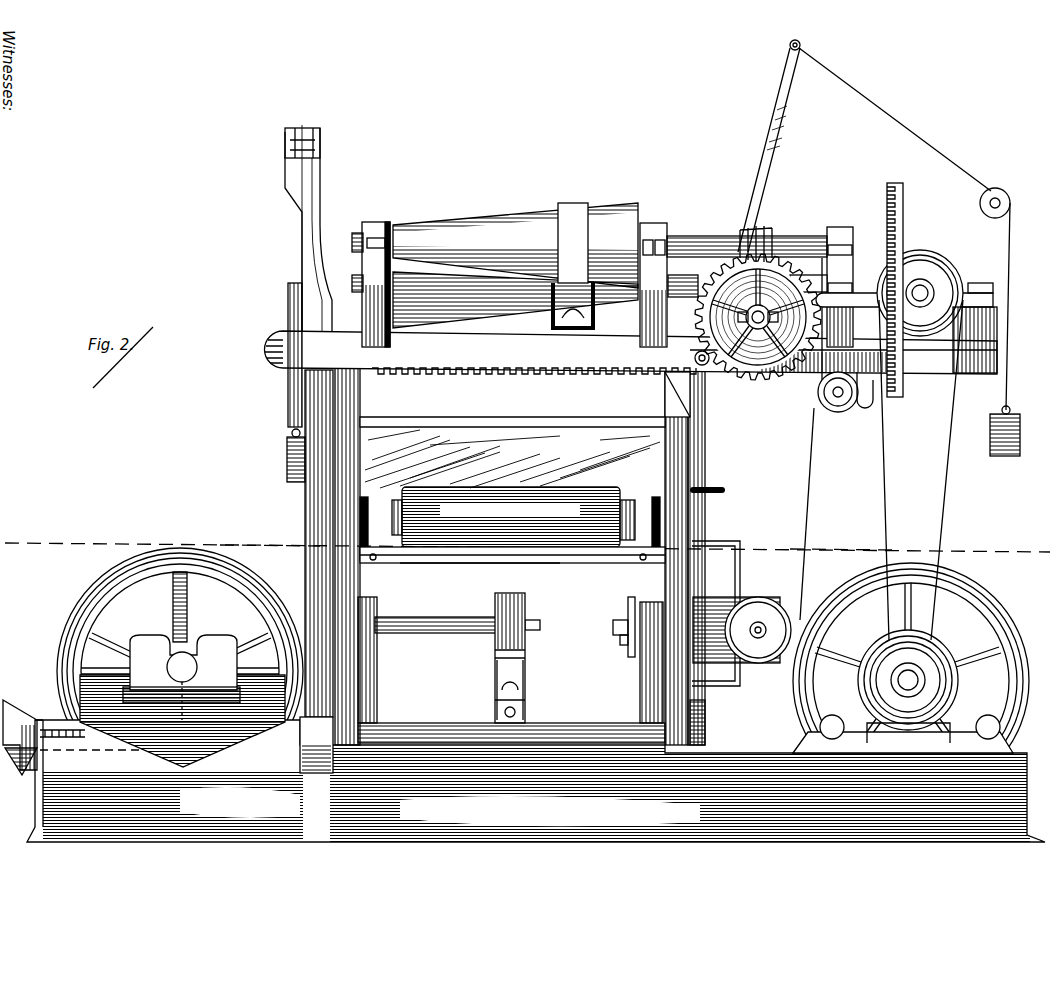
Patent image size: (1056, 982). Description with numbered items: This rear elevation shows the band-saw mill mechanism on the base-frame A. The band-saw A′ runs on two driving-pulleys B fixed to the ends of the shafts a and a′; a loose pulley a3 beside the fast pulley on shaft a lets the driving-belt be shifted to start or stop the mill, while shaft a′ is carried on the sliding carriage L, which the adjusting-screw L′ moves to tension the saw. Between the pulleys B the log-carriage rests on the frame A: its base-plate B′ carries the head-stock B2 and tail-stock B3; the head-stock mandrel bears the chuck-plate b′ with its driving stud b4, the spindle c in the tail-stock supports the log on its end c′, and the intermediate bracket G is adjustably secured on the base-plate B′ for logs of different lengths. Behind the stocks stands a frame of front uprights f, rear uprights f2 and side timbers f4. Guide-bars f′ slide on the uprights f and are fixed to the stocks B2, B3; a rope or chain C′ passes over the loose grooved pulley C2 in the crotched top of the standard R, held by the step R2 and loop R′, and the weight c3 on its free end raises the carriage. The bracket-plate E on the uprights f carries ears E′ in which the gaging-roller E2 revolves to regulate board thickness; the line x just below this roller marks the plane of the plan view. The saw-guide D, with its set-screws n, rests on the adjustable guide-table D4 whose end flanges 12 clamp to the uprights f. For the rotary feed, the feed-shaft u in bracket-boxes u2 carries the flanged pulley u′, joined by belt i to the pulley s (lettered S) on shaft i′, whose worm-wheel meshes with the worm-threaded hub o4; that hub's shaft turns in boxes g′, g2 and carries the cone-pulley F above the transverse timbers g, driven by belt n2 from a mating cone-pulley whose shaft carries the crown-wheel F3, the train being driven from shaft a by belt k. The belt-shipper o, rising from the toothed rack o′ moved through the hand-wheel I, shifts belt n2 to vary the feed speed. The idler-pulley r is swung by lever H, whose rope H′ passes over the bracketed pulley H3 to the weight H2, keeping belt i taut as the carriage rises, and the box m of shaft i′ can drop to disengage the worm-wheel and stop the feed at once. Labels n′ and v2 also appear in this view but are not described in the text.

The base-frame A is at (60, 745).
The band-saw A′ is at (560, 536).
The line x x is at (526, 547).
The driving-pulleys B is at (911, 681).
The driving-shaft a is at (925, 680).
The loose pulley a3 is at (858, 680).
The shaft a′ is at (186, 660).
The sliding carriage L is at (128, 712).
The adjusting-screw L′ is at (27, 705).
The front uprights f is at (342, 652).
The guide-bars f′ is at (680, 385).
The rear uprights f2 is at (866, 410).
The side timbers f4 is at (980, 392).
The pulley S is at (672, 452).
The standard R is at (311, 314).
The loop R′ is at (288, 302).
The step R2 is at (333, 722).
The rope or chain C′ is at (300, 238).
The loose grooved pulley C2 is at (320, 130).
The weight c3 is at (287, 465).
The box m is at (750, 372).
The cone-pulley F is at (515, 245).
The crown-wheel F3 is at (903, 218).
The transverse timbers g is at (362, 312).
The box g′ is at (672, 232).
The box g2 is at (842, 228).
The set bolts or screws n is at (904, 286).
The pulley hub n′ is at (934, 290).
The belt n2 is at (572, 208).
The belt-shipper o is at (722, 280).
The toothed rack o′ is at (810, 236).
The worm-threaded hub o4 is at (743, 228).
The pulley s is at (700, 306).
The belt i is at (820, 282).
The shaft i′ is at (725, 460).
The belt k is at (945, 515).
The lever H is at (774, 160).
The rope or chain H′ is at (965, 165).
The weight H2 is at (1020, 436).
The bracketed pulley H3 is at (1010, 210).
The idler-pulley r is at (822, 405).
The hand-wheel I is at (545, 416).
The bracket-plate E is at (512, 459).
The ears E′ is at (392, 520).
The gaging-roller E2 is at (450, 490).
The saw-guide D is at (470, 562).
The guide-table D4 is at (580, 563).
The vertical flanges 12 is at (374, 563).
The spindle c is at (436, 615).
The spindle end c′ is at (545, 616).
The intermediate bracket G is at (522, 658).
The base-plate B′ is at (511, 723).
The head-stock B2 is at (715, 718).
The tail-stock B3 is at (377, 690).
The chuck-plate b′ is at (628, 600).
The projecting stud b4 is at (620, 645).
The pin v2 is at (725, 490).
The feed-shaft u is at (762, 624).
The flanged pulley u′ is at (760, 662).
The bracket-boxes u2 is at (725, 640).